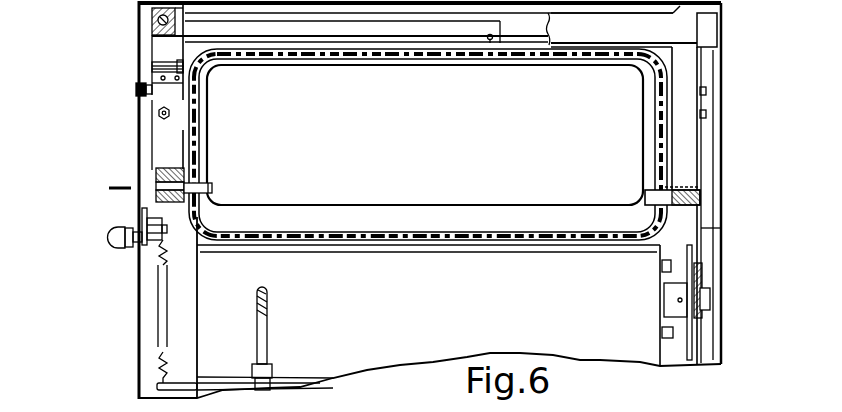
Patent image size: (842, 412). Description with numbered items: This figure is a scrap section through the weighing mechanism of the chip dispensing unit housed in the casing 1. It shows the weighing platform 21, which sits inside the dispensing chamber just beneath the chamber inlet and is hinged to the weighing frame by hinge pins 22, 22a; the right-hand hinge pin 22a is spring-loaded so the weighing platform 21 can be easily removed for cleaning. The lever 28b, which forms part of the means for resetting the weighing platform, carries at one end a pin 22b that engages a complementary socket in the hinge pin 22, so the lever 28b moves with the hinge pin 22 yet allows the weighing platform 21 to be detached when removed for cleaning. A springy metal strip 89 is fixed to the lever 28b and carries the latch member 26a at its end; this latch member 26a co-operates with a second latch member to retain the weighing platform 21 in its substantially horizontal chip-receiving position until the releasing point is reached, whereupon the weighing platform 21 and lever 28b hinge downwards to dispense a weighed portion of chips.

The casing 1 is at (135, 352).
The weighing platform 21 is at (448, 151).
The hinge pin 22 is at (181, 167).
The hinge pin 22a is at (680, 196).
The pin 22b is at (163, 188).
The latch member 26a is at (181, 62).
The lever 28b is at (162, 131).
The springy metal strip 89 is at (181, 97).